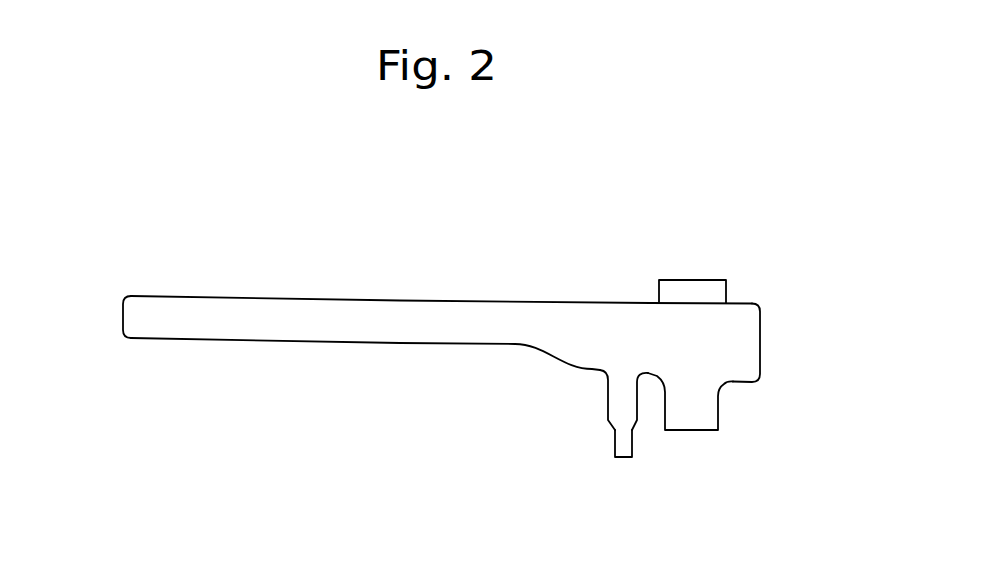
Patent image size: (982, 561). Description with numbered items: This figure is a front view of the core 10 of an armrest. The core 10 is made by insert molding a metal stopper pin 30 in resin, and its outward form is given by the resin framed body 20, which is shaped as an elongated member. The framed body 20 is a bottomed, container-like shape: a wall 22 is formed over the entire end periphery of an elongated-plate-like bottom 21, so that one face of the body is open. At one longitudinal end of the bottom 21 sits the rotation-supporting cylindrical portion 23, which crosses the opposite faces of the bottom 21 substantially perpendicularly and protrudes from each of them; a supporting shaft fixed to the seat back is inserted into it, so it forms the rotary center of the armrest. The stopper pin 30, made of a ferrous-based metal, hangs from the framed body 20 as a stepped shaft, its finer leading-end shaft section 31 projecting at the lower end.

The core 10 is at (742, 290).
The framed body 20 is at (317, 300).
The bottom 21 is at (340, 342).
The wall 22 is at (413, 315).
The rotation-supporting cylindrical portion 23 is at (675, 280).
The stopper pin 30 is at (615, 440).
The leading-end shaft section 31 is at (620, 457).